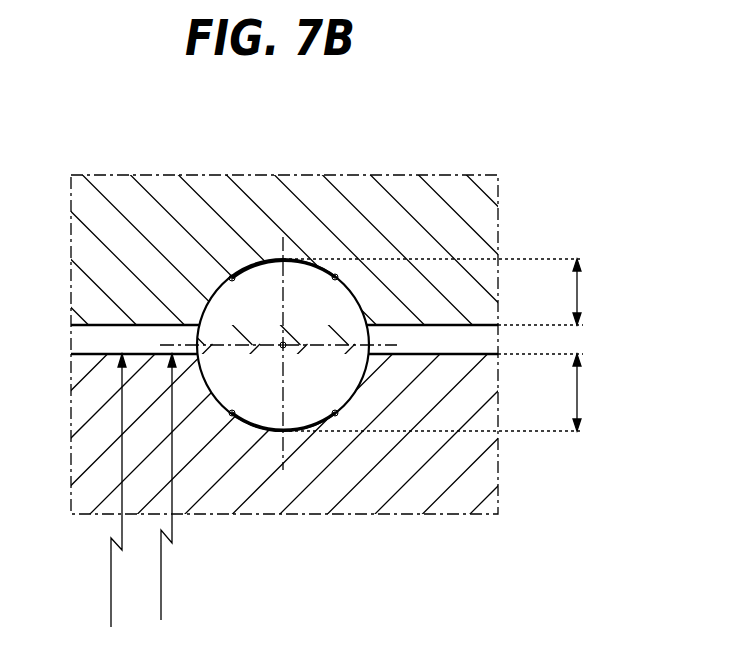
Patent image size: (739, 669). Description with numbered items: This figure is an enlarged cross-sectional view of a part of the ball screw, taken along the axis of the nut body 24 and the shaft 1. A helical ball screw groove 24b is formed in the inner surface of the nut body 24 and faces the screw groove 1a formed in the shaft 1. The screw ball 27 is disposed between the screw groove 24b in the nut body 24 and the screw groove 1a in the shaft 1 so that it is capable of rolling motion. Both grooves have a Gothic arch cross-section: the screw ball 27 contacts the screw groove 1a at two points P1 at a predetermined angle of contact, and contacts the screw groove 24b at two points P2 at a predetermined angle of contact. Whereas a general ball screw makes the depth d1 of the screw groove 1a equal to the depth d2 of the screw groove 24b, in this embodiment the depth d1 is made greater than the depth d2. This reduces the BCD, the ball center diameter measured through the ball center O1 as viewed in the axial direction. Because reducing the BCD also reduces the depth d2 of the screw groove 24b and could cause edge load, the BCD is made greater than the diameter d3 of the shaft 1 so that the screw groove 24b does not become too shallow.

The shaft 1 is at (83, 400).
The screw groove 1a is at (233, 417).
The nut body 24 is at (438, 176).
The screw groove 24b is at (262, 257).
The screw ball 27 is at (310, 283).
The contact points P1 is at (235, 410).
The contact points P2 is at (335, 280).
The ball center O1 is at (281, 347).
The depth of the screw groove in the shaft d1 is at (433, 392).
The depth of the screw groove in the nut body d2 is at (433, 292).
The diameter of the shaft d3 is at (120, 490).
The ball center diameter BCD is at (171, 487).